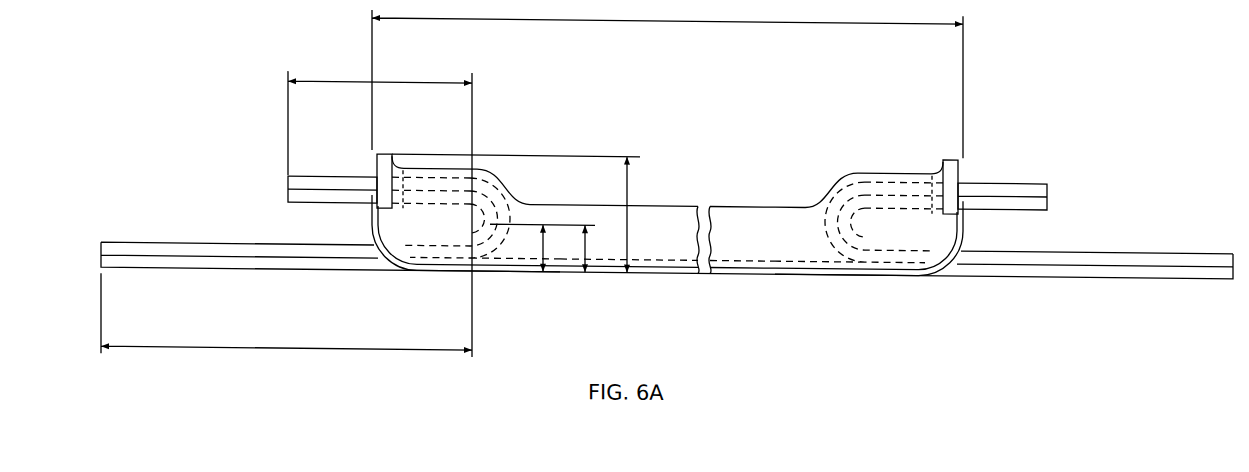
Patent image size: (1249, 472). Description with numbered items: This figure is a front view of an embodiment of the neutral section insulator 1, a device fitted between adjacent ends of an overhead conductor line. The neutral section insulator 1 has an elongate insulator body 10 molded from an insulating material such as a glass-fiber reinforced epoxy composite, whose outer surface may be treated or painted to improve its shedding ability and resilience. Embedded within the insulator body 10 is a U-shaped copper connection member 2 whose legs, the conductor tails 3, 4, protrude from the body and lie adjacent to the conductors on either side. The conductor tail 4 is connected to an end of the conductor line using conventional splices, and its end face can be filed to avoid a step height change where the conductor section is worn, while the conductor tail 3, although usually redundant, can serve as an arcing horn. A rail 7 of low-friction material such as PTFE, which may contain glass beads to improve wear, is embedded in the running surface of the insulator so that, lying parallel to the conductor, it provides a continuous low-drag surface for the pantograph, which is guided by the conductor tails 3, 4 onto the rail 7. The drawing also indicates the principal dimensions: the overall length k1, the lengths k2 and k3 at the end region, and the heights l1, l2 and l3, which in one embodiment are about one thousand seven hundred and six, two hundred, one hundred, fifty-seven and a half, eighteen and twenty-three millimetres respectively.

The neutral section insulator 1 is at (663, 290).
The connection member 2 is at (275, 214).
The conductor tail 3 is at (308, 177).
The conductor tail 4 is at (217, 271).
The rail 7 is at (371, 231).
The insulator body 10 is at (878, 168).
The dimension k1 is at (667, 79).
The dimension k2 is at (286, 324).
The dimension k3 is at (380, 206).
The dimension l1 is at (522, 213).
The dimension l2 is at (595, 265).
The dimension l3 is at (542, 264).